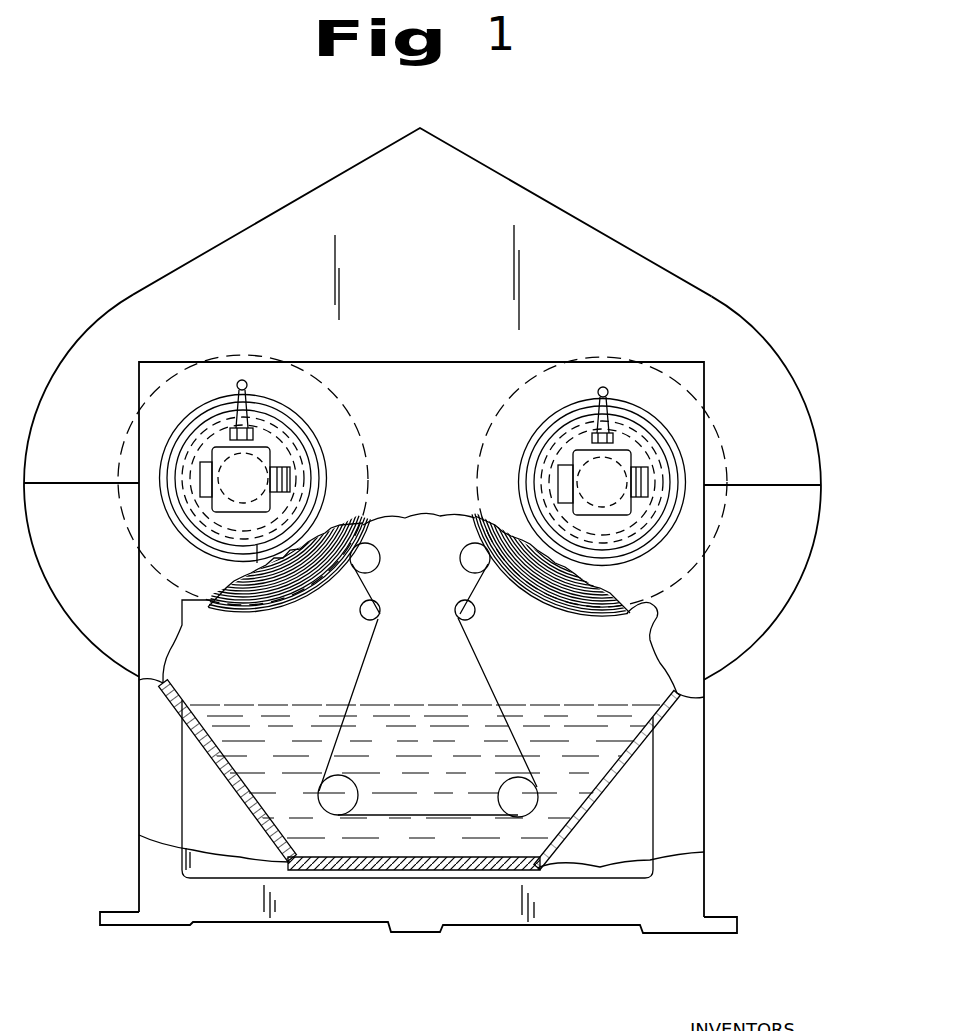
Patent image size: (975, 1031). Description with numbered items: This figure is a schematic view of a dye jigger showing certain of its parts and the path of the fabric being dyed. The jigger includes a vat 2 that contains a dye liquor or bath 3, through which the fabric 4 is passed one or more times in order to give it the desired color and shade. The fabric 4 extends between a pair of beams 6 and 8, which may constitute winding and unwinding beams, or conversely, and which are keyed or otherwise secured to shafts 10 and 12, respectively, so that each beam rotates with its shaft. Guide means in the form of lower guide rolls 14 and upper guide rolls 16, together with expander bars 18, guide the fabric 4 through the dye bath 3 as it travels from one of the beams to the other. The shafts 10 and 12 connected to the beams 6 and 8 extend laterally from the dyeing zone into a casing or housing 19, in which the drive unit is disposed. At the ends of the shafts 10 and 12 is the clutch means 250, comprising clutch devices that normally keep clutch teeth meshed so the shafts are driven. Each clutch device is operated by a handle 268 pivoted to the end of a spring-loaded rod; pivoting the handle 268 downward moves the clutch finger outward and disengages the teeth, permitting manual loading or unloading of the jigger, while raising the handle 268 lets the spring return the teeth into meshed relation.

The vat 2 is at (195, 738).
The dye liquor or bath 3 is at (607, 748).
The fabric 4 is at (383, 817).
The beam 6 is at (368, 450).
The beam 8 is at (657, 440).
The shaft 10 is at (247, 503).
The shaft 12 is at (610, 505).
The lower guide rolls 14 is at (330, 797).
The upper guide rolls 16 is at (470, 560).
The expander bars 18 is at (463, 616).
The casing or housing 19 is at (139, 530).
The clutch means 250 is at (266, 441).
The handle 268 is at (236, 386).